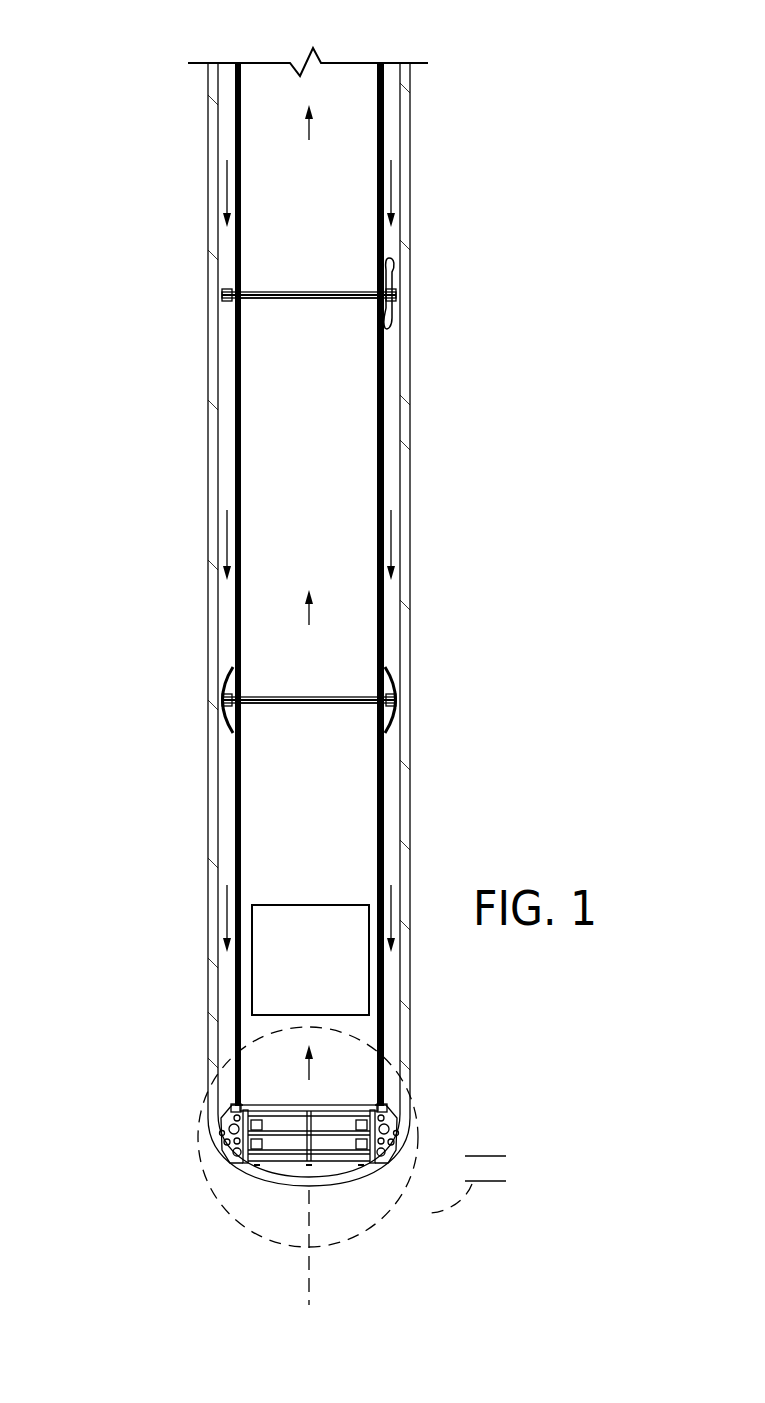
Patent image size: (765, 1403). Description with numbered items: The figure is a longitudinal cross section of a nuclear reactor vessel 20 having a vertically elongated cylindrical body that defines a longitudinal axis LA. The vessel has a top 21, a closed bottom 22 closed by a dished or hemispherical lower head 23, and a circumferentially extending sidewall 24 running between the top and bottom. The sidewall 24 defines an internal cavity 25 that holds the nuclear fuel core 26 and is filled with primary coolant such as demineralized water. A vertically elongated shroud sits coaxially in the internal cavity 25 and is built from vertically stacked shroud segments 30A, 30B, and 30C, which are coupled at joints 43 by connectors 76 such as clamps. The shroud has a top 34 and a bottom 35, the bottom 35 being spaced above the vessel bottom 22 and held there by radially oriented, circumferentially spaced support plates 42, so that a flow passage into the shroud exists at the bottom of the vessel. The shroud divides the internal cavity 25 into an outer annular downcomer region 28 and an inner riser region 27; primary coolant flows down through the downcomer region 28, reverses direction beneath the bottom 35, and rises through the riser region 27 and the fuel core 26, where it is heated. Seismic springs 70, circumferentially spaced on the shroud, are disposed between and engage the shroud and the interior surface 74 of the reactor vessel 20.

The reactor vessel 20 is at (110, 138).
The top 21 is at (424, 42).
The closed bottom 22 is at (220, 1181).
The lower head 23 is at (356, 1182).
The sidewall 24 is at (406, 530).
The internal cavity 25 is at (396, 369).
The nuclear fuel core 26 is at (324, 972).
The riser region 27 is at (252, 817).
The downcomer region 28 is at (392, 842).
The shroud segment 30A is at (332, 202).
The shroud segment 30B is at (332, 552).
The shroud segment 30C is at (332, 850).
The top of shroud 34 is at (363, 63).
The bottom of shroud 35 is at (298, 1104).
The support plates 42 is at (390, 1122).
The joints 43 is at (290, 282).
The seismic springs 70 is at (394, 272).
The interior surface 74 is at (224, 463).
The connectors 76 is at (352, 310).
The longitudinal axis LA is at (311, 1295).